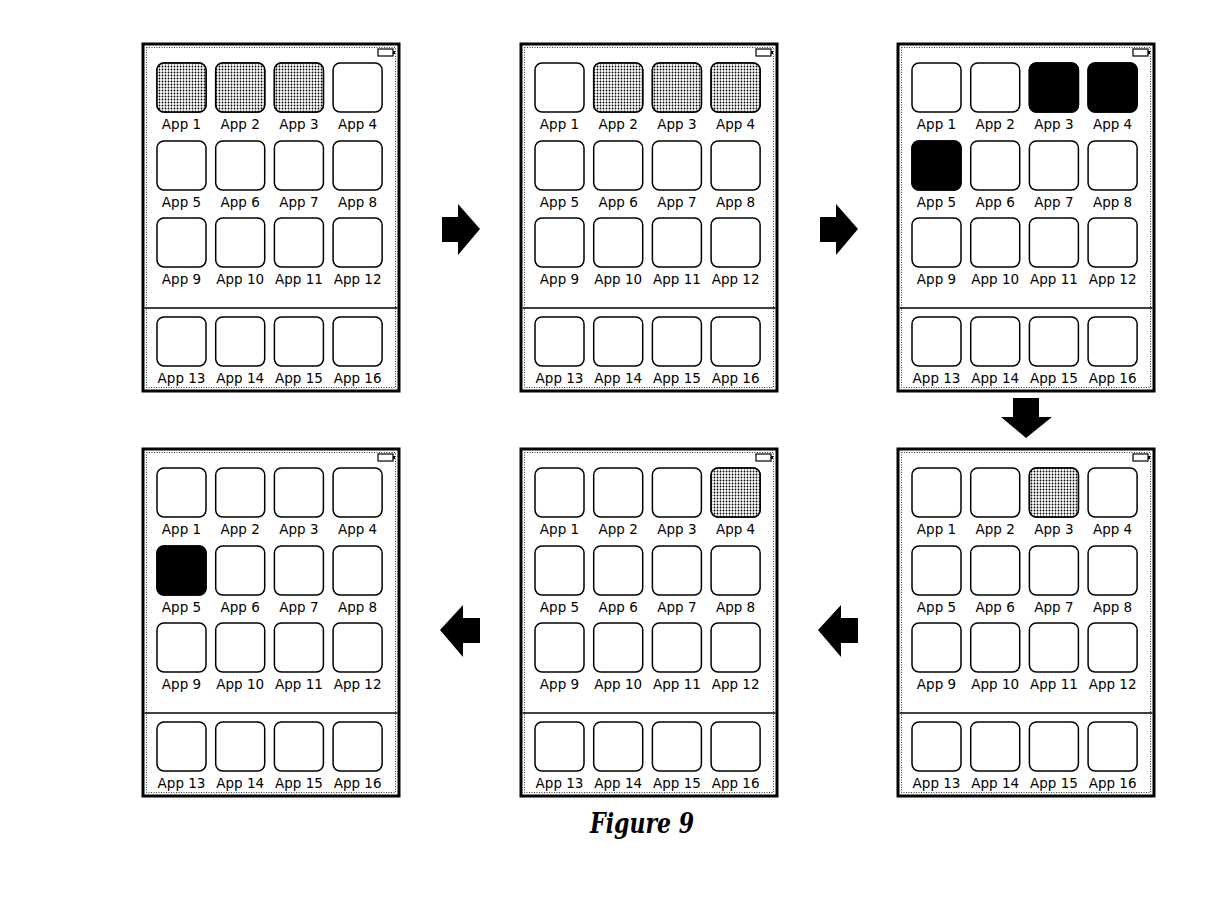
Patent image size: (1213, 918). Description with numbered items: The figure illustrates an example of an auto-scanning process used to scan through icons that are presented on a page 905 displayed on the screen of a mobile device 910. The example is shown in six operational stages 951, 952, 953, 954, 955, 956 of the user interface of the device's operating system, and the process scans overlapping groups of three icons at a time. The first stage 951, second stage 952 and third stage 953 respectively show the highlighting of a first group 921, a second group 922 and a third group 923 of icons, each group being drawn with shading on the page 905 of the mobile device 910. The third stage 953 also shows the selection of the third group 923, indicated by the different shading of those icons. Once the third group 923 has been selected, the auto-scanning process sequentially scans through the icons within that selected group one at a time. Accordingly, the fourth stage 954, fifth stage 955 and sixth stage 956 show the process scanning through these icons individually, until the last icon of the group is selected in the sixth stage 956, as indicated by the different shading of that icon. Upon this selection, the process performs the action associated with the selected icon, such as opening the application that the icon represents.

The page 905 is at (252, 34).
The mobile device 910 is at (258, 96).
The first group of icons 921 is at (206, 83).
The second group of icons 922 is at (707, 87).
The third group of icons 923 is at (1055, 123).
The first stage 951 is at (268, 227).
The second stage 952 is at (670, 227).
The third stage 953 is at (1048, 227).
The fourth stage 954 is at (1026, 631).
The fifth stage 955 is at (649, 631).
The sixth stage 956 is at (271, 631).